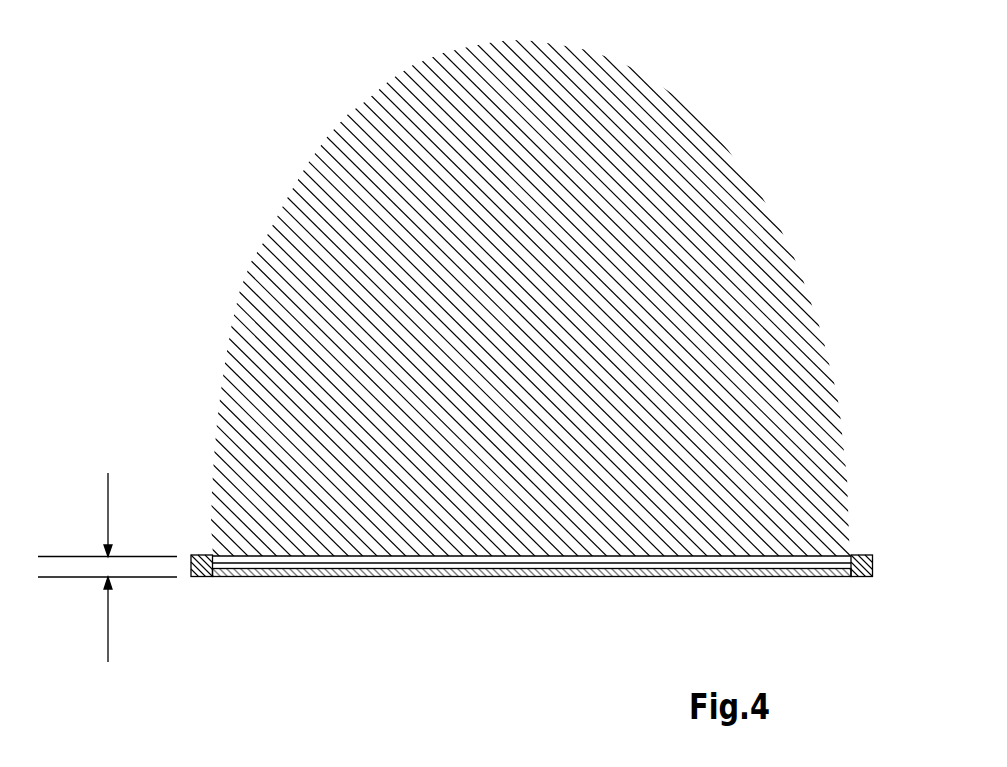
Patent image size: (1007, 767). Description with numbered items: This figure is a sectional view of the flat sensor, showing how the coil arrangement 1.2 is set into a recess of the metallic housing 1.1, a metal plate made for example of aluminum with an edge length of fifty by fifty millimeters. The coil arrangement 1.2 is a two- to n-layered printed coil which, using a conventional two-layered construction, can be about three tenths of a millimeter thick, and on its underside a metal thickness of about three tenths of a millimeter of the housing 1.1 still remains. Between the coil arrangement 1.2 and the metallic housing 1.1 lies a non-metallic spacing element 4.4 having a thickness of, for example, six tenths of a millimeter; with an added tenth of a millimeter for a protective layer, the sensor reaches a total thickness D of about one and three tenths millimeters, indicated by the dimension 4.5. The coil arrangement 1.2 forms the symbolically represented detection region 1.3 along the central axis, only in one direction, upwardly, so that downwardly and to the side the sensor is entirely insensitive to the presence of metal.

The metallic housing 1.1 is at (201, 578).
The coil arrangement 1.2 is at (831, 562).
The detection region 1.3 is at (790, 463).
The non-metallic spacing element 4.4 is at (487, 567).
The spacing gap 4.5 is at (59, 468).